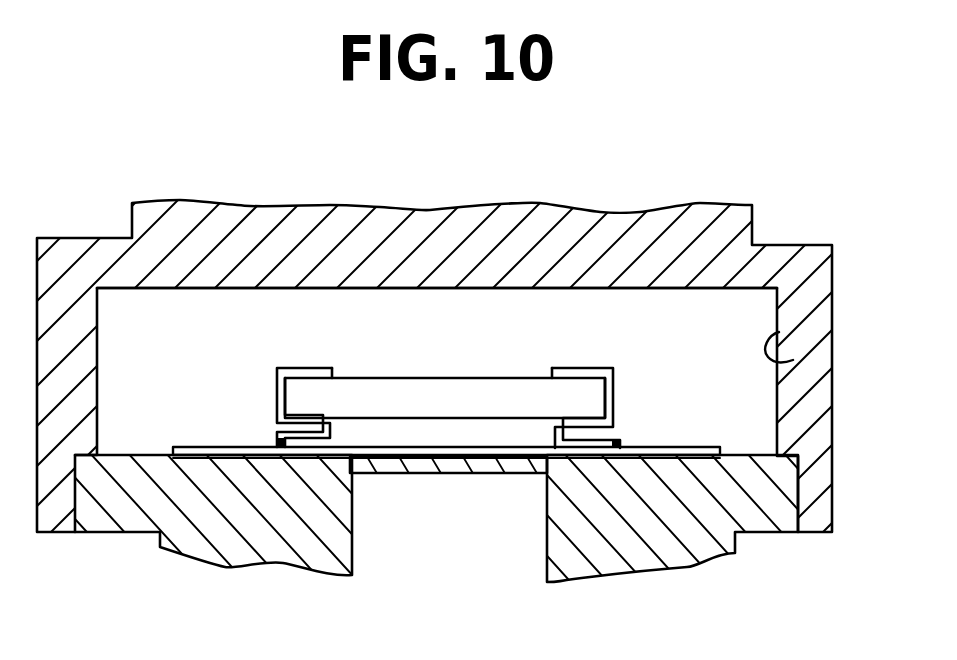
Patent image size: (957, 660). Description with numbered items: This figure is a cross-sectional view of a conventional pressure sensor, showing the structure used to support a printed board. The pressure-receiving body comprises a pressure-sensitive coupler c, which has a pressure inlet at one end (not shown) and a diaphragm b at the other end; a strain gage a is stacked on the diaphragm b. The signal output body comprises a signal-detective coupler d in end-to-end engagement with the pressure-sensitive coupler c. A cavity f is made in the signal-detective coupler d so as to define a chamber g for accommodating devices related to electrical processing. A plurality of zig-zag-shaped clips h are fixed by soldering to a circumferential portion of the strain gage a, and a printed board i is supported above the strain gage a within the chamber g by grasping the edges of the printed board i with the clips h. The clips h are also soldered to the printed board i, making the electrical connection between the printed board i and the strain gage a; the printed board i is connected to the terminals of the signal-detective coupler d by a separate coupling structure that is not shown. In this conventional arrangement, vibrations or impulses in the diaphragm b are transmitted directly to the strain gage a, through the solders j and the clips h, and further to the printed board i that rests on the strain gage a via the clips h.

The strain gage a is at (700, 447).
The diaphragm b is at (490, 477).
The pressure-sensitive coupler c is at (700, 540).
The signal-detective coupler d is at (811, 246).
The cavity f is at (790, 360).
The chamber g is at (258, 306).
The zig-zag-shaped clips h is at (277, 372).
The printed board i is at (465, 378).
The solders j is at (280, 441).